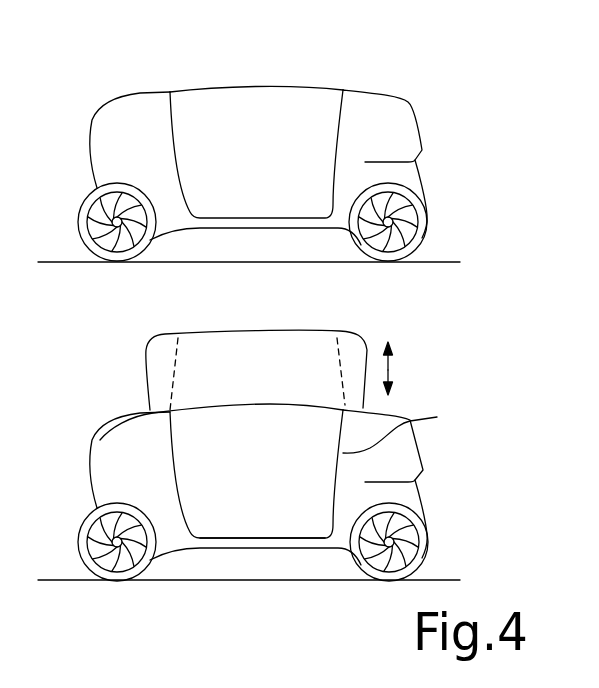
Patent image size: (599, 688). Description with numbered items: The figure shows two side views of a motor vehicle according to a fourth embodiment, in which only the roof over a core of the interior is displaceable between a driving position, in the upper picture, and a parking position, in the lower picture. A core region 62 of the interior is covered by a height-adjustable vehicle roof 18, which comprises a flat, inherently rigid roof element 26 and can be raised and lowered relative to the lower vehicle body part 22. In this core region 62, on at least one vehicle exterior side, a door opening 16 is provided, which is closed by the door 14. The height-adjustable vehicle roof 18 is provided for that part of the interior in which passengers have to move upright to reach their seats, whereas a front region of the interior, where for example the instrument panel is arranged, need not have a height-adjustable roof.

The door 14 is at (245, 467).
The door opening 16 is at (408, 426).
The vehicle roof 18 is at (352, 62).
The lower vehicle body part 22 is at (459, 186).
The roof element 26 is at (262, 345).
The core region 62 is at (195, 68).